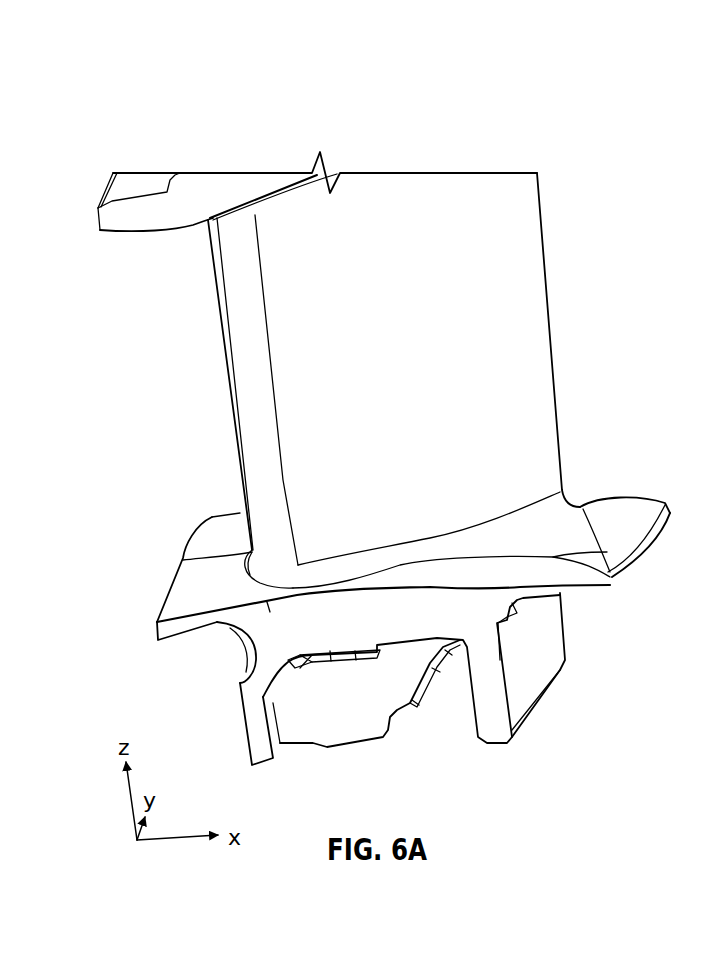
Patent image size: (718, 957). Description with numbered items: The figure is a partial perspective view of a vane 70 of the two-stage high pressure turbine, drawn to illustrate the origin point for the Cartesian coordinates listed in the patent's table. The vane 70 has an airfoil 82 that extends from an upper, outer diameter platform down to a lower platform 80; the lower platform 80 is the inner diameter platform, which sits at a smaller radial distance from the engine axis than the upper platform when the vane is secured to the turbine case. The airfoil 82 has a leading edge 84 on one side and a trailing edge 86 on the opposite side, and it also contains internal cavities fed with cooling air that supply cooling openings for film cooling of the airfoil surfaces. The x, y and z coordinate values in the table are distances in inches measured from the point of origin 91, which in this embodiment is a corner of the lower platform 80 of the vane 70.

The vane 70 is at (158, 128).
The lower platform 80 is at (252, 634).
The airfoil 82 is at (437, 446).
The leading edge 84 is at (222, 383).
The trailing edge 86 is at (543, 255).
The point of origin 91 is at (612, 577).